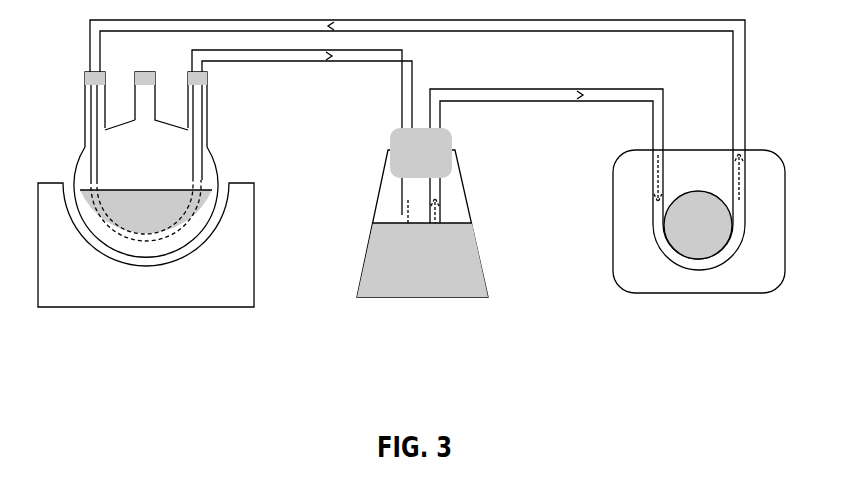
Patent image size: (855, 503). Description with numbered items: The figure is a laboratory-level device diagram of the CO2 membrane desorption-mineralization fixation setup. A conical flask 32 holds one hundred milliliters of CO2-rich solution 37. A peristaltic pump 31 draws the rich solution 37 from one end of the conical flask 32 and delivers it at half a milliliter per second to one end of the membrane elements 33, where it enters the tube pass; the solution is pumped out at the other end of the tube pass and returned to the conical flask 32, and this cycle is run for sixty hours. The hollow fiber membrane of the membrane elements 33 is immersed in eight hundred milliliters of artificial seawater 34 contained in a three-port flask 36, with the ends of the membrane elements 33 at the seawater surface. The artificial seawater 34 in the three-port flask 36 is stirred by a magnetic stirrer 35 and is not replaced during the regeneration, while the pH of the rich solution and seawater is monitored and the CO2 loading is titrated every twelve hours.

The peristaltic pump 31 is at (698, 228).
The conical flask 32 is at (383, 297).
The membrane elements 33 is at (200, 237).
The artificial seawater 34 is at (145, 255).
The magnetic stirrer 35 is at (52, 277).
The three-port flask 36 is at (217, 228).
The rich solution 37 is at (453, 297).